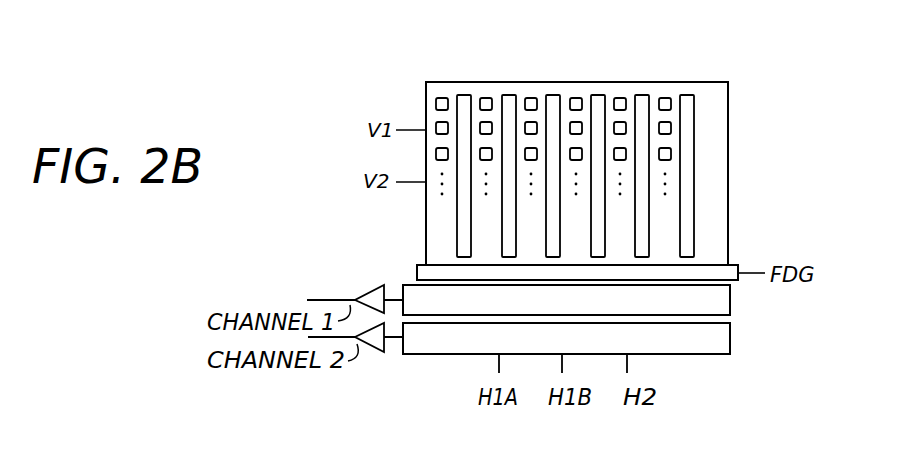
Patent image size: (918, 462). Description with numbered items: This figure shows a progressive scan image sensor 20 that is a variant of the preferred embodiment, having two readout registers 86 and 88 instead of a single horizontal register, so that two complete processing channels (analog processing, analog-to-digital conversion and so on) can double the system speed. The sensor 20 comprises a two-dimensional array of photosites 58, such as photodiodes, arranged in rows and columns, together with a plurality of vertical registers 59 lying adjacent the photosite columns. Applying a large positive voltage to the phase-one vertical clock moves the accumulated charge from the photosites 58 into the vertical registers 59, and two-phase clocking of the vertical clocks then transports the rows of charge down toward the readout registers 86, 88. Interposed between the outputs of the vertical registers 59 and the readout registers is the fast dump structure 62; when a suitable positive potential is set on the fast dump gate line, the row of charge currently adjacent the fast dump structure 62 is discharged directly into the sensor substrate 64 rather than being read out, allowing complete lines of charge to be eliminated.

The image sensor 20 is at (727, 107).
The photosites 58 is at (437, 103).
The vertical registers 59 is at (465, 95).
The sensor substrate 64 is at (713, 230).
The fast dump structure 62 is at (418, 272).
The readout register 86 is at (730, 298).
The readout register 88 is at (730, 342).